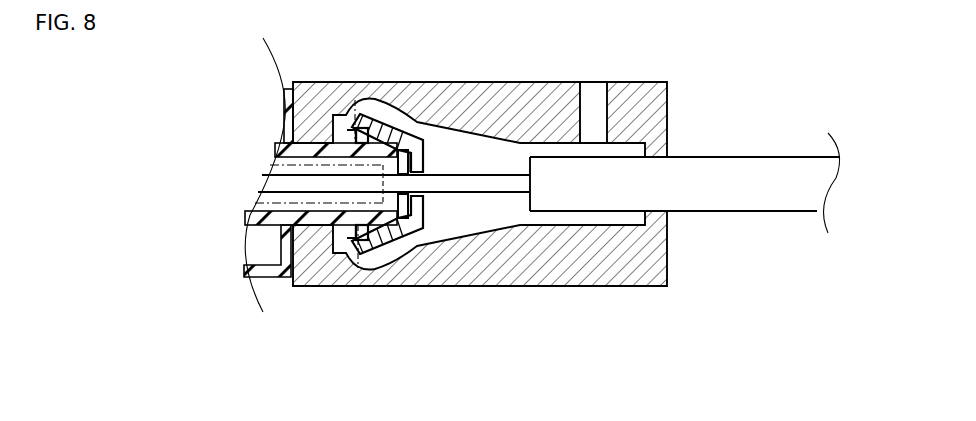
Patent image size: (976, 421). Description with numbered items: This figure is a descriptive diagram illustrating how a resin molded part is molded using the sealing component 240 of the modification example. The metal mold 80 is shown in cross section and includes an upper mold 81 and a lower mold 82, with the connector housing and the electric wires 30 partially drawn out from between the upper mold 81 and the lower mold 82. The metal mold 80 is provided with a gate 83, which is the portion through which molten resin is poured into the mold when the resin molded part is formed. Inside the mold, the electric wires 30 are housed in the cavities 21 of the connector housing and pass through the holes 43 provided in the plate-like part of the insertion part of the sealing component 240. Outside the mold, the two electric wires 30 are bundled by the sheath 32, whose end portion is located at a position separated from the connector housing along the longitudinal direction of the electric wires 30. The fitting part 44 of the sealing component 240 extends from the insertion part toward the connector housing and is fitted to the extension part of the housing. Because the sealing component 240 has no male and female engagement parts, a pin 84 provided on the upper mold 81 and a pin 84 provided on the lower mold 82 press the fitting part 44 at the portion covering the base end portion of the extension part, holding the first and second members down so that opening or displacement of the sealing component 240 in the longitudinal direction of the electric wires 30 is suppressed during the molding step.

The metal mold 80 is at (480, 184).
The upper mold 81 is at (523, 82).
The lower mold 82 is at (554, 287).
The gate 83 is at (590, 105).
The pin 84 is at (355, 100).
The fitting part 44 is at (371, 112).
The hole 43 is at (416, 195).
The sealing component 240 is at (436, 155).
The cavity 21 is at (384, 226).
The electric wire 30 is at (481, 182).
The sheath 32 is at (742, 202).